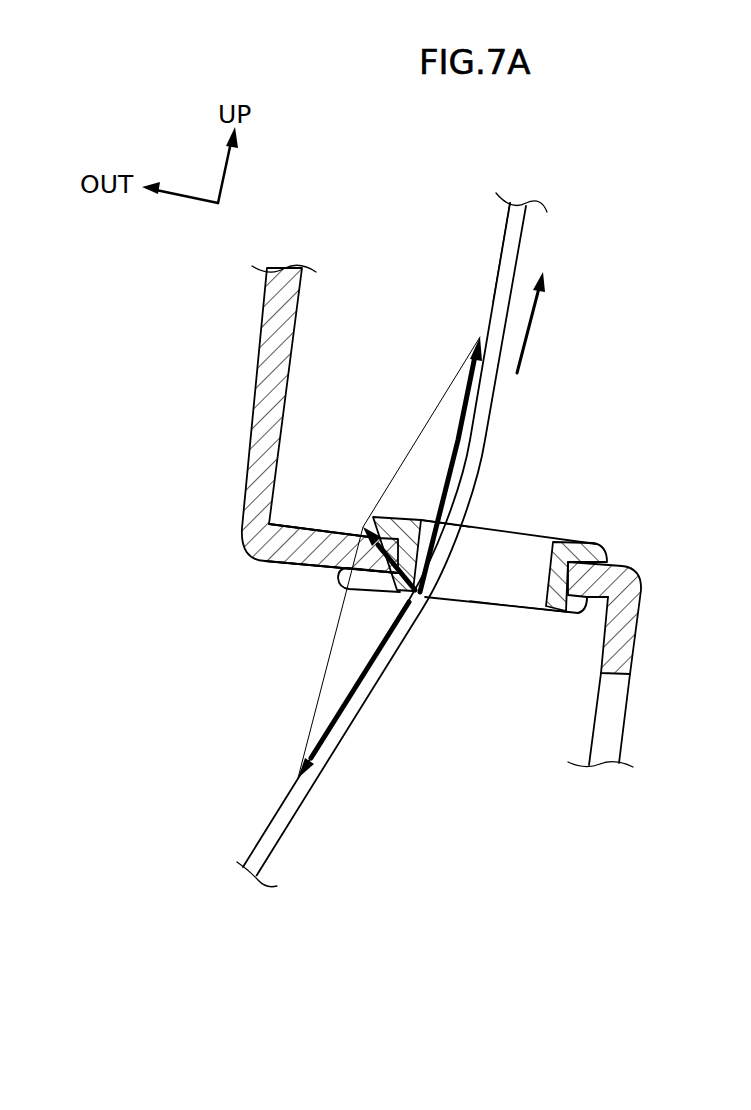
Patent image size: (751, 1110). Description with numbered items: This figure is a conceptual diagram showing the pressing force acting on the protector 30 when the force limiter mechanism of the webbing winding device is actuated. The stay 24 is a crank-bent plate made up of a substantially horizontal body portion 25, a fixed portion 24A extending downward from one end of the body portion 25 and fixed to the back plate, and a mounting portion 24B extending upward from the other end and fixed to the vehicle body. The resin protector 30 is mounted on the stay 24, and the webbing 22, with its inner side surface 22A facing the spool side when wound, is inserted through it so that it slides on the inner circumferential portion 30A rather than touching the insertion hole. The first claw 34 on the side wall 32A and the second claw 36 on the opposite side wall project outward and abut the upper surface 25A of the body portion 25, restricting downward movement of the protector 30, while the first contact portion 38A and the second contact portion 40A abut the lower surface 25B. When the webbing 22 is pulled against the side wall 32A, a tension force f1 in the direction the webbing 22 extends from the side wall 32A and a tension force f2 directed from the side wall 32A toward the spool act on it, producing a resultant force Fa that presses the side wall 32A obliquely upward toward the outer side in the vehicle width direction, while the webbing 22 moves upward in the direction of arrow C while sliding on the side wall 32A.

The webbing 22 is at (429, 540).
The inner side surface 22A is at (503, 243).
The stay 24 is at (294, 448).
The fixed portion 24A is at (630, 712).
The mounting portion 24B is at (300, 303).
The body portion 25 is at (256, 561).
The upper surface 25A is at (300, 524).
The lower surface 25B is at (293, 566).
The protector 30 is at (515, 566).
The inner circumferential portion 30A is at (530, 598).
The side wall 32A is at (452, 537).
The first claw 34 is at (383, 517).
The second claw 36 is at (607, 550).
The first contact portion 38A is at (583, 614).
The second contact portion 40A is at (335, 576).
The tension force f1 is at (458, 428).
The tension force f2 is at (355, 702).
The resultant force Fa is at (373, 565).
The arrow C direction C is at (533, 306).